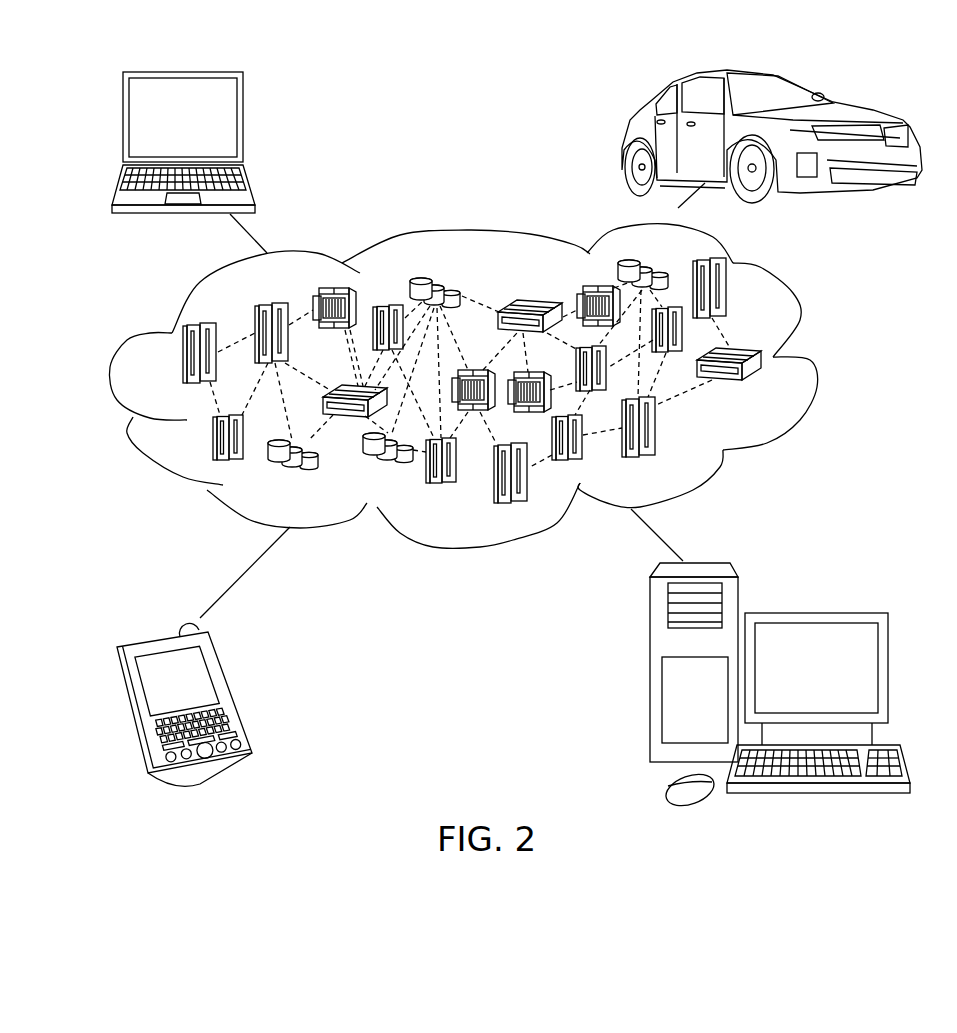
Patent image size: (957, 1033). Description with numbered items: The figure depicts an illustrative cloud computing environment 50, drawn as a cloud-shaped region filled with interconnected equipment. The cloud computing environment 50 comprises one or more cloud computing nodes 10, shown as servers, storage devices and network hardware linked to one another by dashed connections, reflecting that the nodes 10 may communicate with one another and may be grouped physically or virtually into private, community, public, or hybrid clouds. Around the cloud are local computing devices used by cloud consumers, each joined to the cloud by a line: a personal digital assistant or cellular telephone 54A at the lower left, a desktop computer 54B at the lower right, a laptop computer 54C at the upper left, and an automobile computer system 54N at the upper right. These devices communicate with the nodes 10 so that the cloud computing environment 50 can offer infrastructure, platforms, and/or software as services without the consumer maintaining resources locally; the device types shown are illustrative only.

The cloud computing node 10 is at (772, 390).
The cloud computing environment 50 is at (813, 364).
The personal digital assistant or cellular telephone 54A is at (233, 693).
The desktop computer 54B is at (813, 613).
The laptop computer 54C is at (243, 122).
The automobile computer system 54N is at (622, 138).